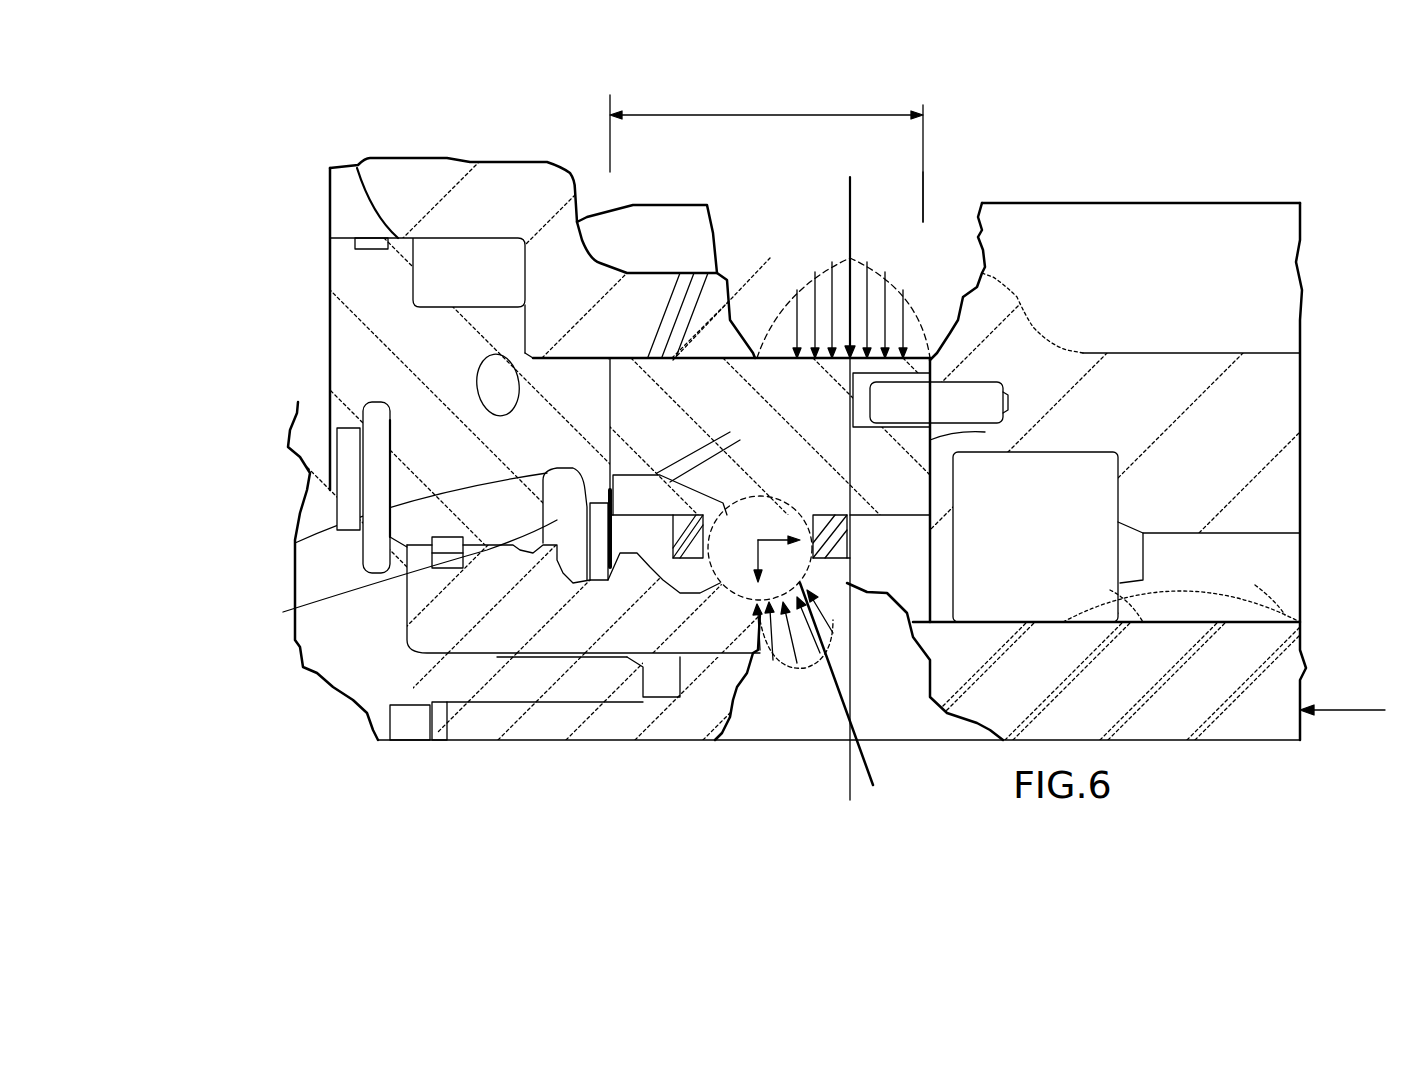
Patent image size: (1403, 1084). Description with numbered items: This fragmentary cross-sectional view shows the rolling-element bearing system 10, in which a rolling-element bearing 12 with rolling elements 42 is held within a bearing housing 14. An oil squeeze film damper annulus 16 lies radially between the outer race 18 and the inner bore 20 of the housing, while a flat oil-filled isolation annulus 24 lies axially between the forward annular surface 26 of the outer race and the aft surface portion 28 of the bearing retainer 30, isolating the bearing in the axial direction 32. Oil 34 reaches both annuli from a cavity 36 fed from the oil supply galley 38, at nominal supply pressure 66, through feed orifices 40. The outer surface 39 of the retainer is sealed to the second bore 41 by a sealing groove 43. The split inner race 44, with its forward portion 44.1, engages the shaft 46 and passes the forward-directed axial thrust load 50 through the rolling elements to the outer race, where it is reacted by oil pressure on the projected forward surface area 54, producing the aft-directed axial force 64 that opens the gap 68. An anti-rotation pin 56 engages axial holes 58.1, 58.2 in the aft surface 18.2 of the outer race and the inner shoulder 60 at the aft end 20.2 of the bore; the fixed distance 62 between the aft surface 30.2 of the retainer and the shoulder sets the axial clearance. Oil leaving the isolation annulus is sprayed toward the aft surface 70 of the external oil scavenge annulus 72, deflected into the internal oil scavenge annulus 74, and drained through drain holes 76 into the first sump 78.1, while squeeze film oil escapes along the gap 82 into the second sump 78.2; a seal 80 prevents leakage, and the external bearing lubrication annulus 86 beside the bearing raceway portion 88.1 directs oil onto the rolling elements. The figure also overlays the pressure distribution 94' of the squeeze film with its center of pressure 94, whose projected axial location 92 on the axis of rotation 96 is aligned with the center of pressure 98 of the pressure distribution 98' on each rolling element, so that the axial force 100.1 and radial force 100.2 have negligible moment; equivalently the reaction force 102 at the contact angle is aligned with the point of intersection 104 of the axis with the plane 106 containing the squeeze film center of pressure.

The rolling-element bearing system 10 is at (1068, 78).
The rolling-element bearing 12 is at (722, 370).
The bearing housing 14 is at (572, 172).
The oil squeeze film damper annulus 16 is at (742, 374).
The outer race 18 is at (708, 448).
The aft surface of the outer race 18.2 is at (945, 430).
The inner bore 20 is at (644, 385).
The aft end of the inner bore 20.2 is at (937, 338).
The oil-filled isolation annulus 24 is at (624, 466).
The forward annular surface 26 is at (614, 490).
The aft surface portion 28 is at (568, 465).
The bearing retainer 30 is at (328, 290).
The aft surface of the bearing retainer 30.2 is at (608, 104).
The axial direction 32 is at (250, 428).
The oil 34 is at (668, 412).
The cavity 36 is at (623, 413).
The oil supply galley 38 is at (1094, 217).
The outer surface of the bearing retainer 39 is at (320, 248).
The feed orifice 40 is at (663, 303).
The second bore 41 is at (357, 167).
The rolling element 42 is at (765, 502).
The sealing groove 43 is at (345, 202).
The split inner race 44 is at (410, 648).
The forward portion of the split inner race 44.1 is at (575, 676).
The shaft 46 is at (1302, 683).
The forward-directed axial thrust load 50 is at (1352, 710).
The projected forward surface area 54 is at (699, 457).
The anti-rotation pin 56 is at (930, 400).
The axial hole in the aft surface of the outer race 58.1 is at (930, 468).
The axial hole in the inner shoulder 58.2 is at (985, 432).
The inner shoulder 60 is at (925, 135).
The fixed distance 62 is at (721, 115).
The aft-directed axial force 64 is at (635, 390).
The nominal supply pressure 66 is at (1192, 309).
The gap 68 is at (620, 512).
The aft surface of the external oil scavenge annulus 70 is at (608, 583).
The external oil scavenge annulus 72 is at (553, 596).
The internal oil scavenge annulus 74 is at (295, 543).
The drain hole 76 is at (478, 360).
The first sump 78.1 is at (431, 298).
The second sump 78.2 is at (1126, 537).
The seal 80 is at (391, 571).
The gap 82 is at (918, 530).
The external bearing lubrication annulus 86 is at (655, 590).
The bearing raceway portion 88.1 is at (740, 588).
The projected axial location 92 is at (850, 808).
The center of pressure 94 is at (883, 267).
The pressure distribution 94' is at (848, 295).
The axis of rotation 96 is at (925, 742).
The center of pressure 98 is at (863, 684).
The pressure distribution 98' is at (740, 685).
The axial force 100.1 is at (768, 533).
The radial force 100.2 is at (760, 562).
The reaction force 102 is at (835, 745).
The point of intersection 104 is at (860, 732).
The plane 106 is at (840, 783).